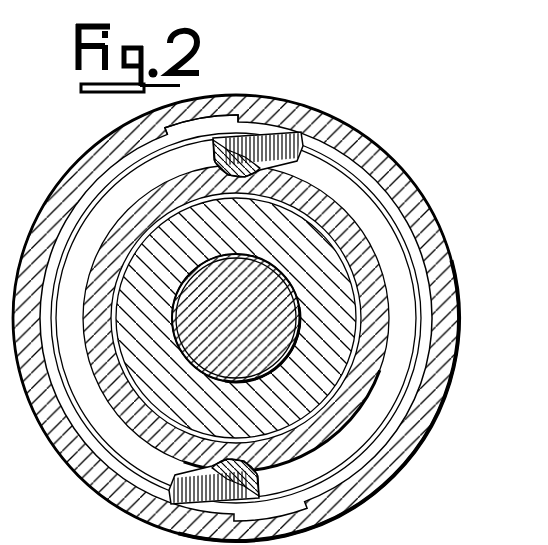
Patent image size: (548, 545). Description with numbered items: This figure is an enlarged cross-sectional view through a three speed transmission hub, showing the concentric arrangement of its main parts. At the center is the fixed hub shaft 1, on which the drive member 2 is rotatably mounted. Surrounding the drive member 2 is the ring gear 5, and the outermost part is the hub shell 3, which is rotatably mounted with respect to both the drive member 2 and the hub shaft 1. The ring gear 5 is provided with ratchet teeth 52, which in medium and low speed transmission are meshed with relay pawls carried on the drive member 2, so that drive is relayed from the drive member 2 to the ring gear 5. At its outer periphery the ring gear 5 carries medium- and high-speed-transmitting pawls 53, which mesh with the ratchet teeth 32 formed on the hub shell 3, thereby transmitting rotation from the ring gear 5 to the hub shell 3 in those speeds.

The hub shaft 1 is at (287, 343).
The drive member 2 is at (343, 333).
The hub shell 3 is at (365, 147).
The ring gear 5 is at (355, 235).
The ratchet teeth 32 is at (273, 108).
The ratchet teeth 52 is at (318, 184).
The medium- and high-speed-transmitting pawls 53 is at (295, 143).